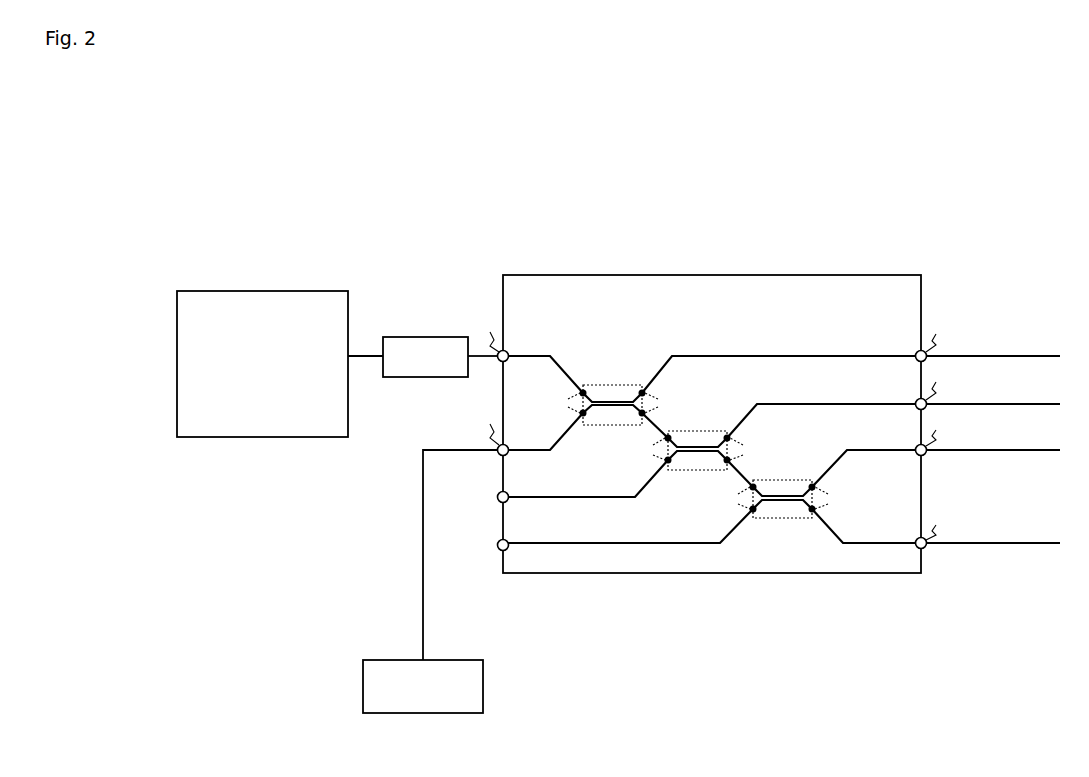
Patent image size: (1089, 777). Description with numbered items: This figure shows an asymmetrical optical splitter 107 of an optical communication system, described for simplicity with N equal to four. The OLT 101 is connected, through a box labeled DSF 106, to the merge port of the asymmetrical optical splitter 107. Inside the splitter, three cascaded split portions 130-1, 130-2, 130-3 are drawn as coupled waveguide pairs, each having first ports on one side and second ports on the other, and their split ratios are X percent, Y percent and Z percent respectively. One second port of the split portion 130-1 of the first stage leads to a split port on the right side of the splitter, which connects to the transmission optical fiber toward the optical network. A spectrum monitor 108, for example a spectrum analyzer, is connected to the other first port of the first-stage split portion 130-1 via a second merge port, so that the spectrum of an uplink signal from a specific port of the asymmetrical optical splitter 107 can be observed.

The OLT 101 is at (275, 290).
The dispersion shifted fiber (DSF) 106 is at (426, 336).
The asymmetrical optical splitter 107 is at (603, 275).
The spectrum monitor 108 is at (485, 688).
The split portion of the first stage 130-1 is at (622, 384).
The split portion 130-2 is at (710, 430).
The split portion 130-3 is at (792, 480).